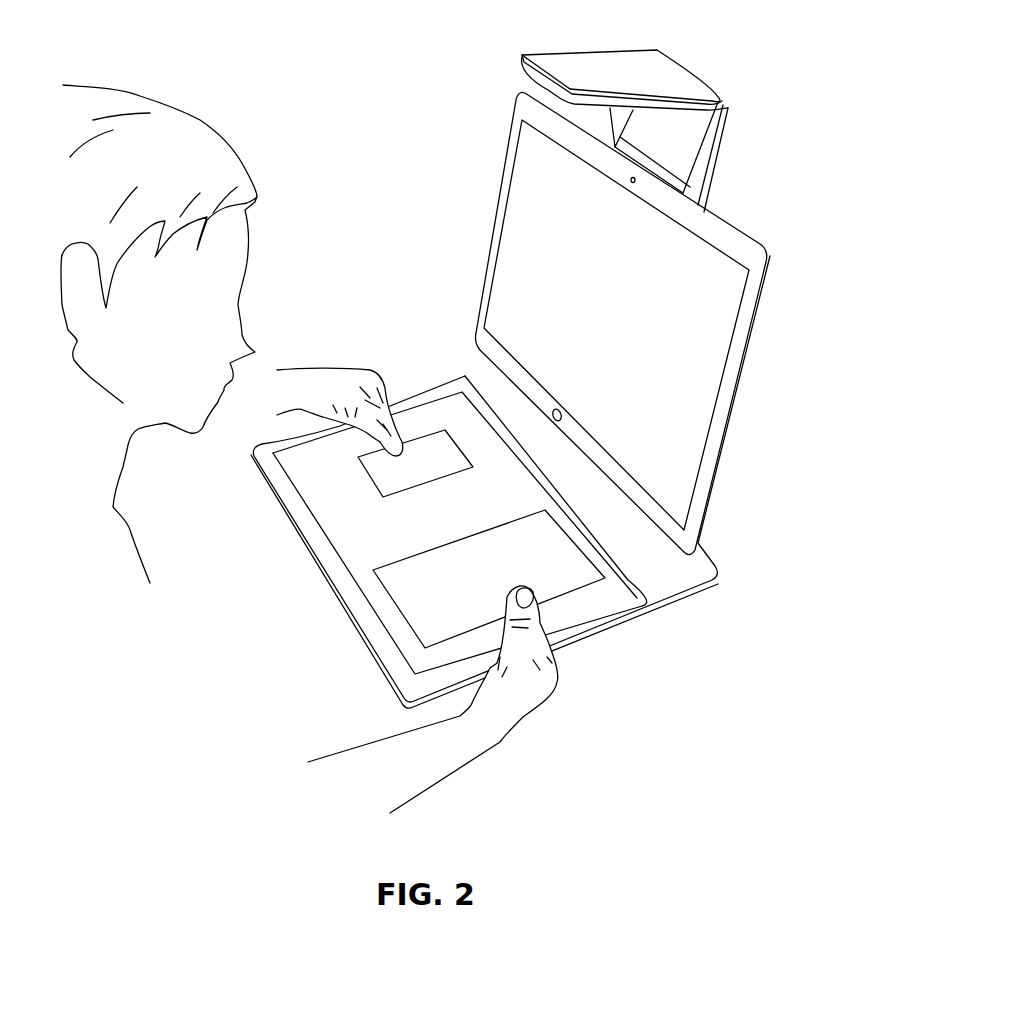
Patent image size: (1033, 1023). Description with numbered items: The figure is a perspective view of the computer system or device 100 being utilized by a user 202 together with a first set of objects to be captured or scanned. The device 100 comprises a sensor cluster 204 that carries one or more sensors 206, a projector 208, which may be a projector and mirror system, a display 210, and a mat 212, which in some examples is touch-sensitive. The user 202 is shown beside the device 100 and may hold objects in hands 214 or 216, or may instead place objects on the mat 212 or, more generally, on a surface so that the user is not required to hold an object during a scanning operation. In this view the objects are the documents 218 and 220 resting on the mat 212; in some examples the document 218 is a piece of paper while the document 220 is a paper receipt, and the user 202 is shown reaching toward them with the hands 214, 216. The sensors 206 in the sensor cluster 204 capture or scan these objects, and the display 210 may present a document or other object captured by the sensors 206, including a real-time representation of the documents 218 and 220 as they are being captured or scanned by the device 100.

The device 100 is at (805, 337).
The user 202 is at (190, 125).
The sensor cluster 204 is at (610, 62).
The sensors 206 is at (667, 103).
The projector 208 is at (610, 108).
The display 210 is at (745, 250).
The mat 212 is at (700, 575).
The hand 214 is at (339, 378).
The hand 216 is at (430, 770).
The document 218 is at (415, 627).
The document 220 is at (413, 447).